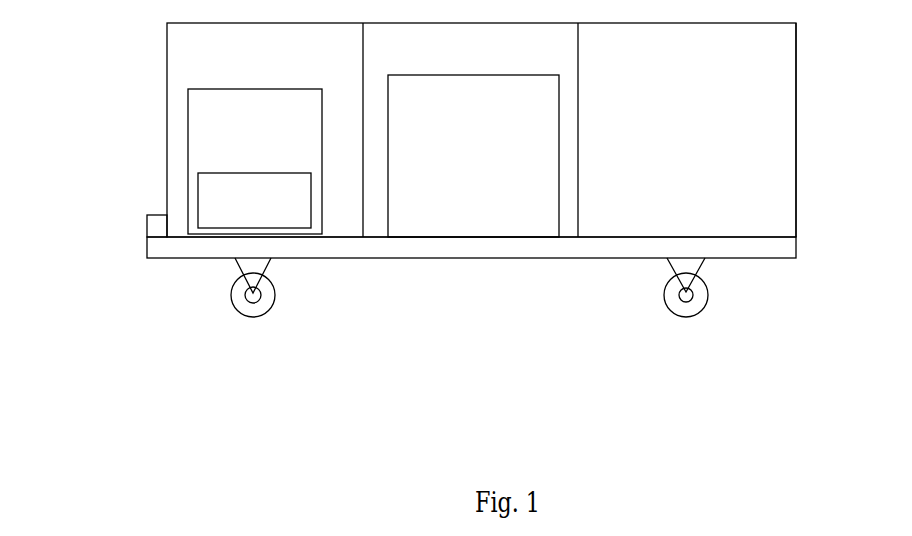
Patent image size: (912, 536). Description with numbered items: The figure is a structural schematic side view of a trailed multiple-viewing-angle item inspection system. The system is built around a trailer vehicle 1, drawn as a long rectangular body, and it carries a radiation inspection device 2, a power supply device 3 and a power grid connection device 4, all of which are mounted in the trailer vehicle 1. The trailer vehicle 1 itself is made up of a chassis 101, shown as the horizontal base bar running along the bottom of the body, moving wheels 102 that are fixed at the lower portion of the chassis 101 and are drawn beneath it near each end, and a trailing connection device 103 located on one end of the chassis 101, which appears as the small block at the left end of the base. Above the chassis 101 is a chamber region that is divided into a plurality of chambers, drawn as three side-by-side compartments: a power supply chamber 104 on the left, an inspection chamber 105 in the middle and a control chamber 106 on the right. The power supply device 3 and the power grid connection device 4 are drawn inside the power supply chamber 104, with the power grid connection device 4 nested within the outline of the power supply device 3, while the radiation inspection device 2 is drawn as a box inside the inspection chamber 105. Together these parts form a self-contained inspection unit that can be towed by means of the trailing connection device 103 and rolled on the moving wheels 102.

The trailer vehicle 1 is at (167, 105).
The radiation inspection device 2 is at (473, 156).
The power supply device 3 is at (255, 161).
The power grid connection device 4 is at (254, 200).
The chassis 101 is at (728, 249).
The moving wheels 102 is at (275, 297).
The trailing connection device 103 is at (163, 242).
The power supply chamber 104 is at (296, 130).
The inspection chamber 105 is at (507, 130).
The control chamber 106 is at (729, 130).